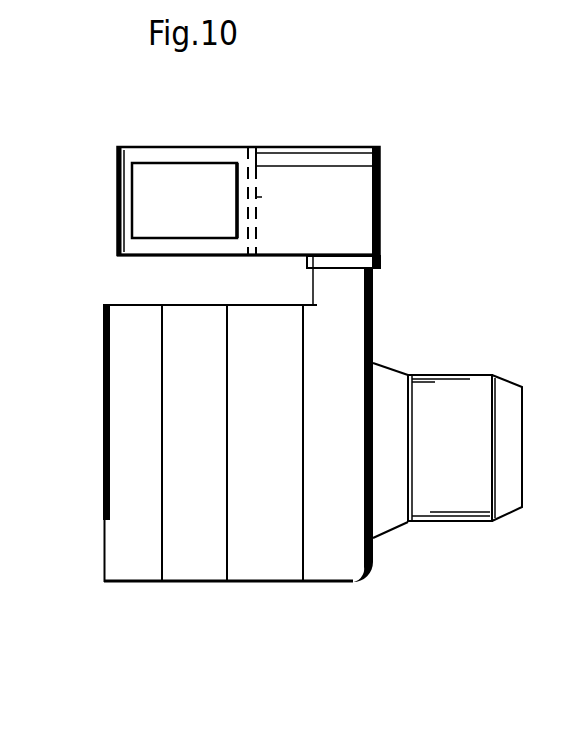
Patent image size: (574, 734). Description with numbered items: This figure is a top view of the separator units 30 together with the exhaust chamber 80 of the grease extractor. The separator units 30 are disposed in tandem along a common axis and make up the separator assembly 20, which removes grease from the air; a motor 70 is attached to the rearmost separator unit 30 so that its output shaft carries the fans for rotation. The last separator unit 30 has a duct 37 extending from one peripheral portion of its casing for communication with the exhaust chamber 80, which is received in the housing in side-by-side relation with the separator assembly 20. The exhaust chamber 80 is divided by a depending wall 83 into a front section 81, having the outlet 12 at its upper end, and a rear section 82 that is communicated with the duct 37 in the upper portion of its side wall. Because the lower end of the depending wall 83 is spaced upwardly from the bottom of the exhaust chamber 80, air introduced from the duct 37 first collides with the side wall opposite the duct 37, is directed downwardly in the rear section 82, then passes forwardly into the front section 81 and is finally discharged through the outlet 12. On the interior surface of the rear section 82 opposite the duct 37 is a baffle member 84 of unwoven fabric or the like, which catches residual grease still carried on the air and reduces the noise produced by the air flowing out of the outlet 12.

The outlet 12 is at (172, 170).
The separator assembly 20 is at (102, 302).
The separator unit 30 is at (253, 570).
The duct 37 is at (353, 293).
The motor 70 is at (448, 490).
The exhaust chamber 80 is at (117, 143).
The front section 81 is at (148, 210).
The rear section 82 is at (340, 205).
The depending wall 83 is at (262, 197).
The baffle member 84 is at (328, 181).